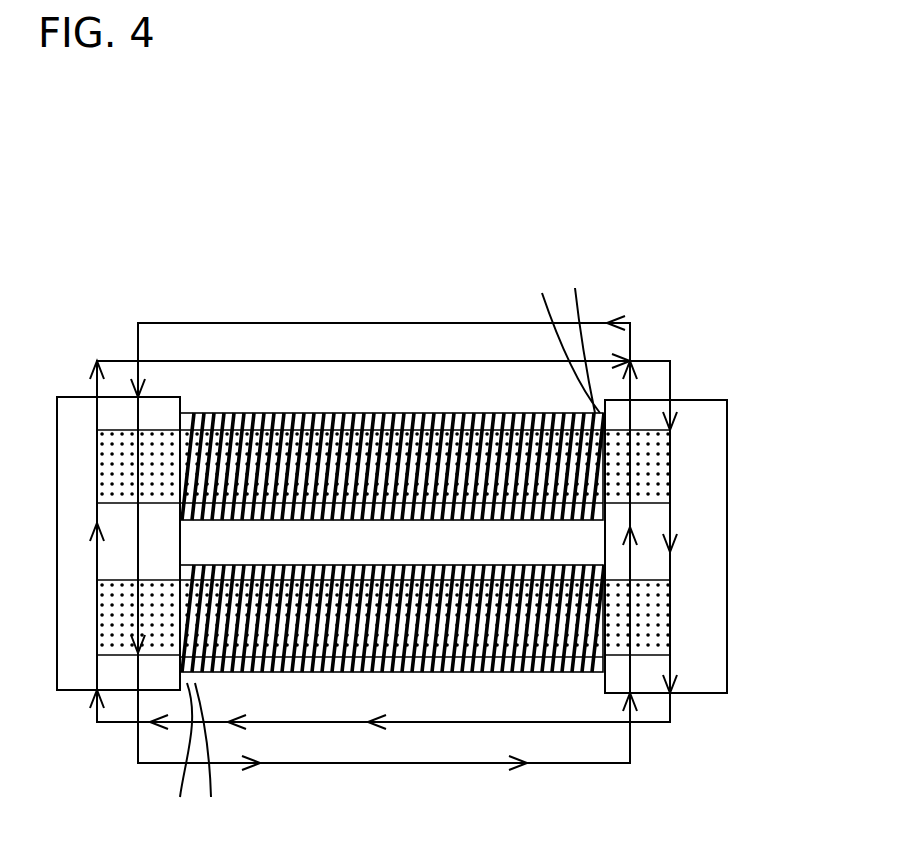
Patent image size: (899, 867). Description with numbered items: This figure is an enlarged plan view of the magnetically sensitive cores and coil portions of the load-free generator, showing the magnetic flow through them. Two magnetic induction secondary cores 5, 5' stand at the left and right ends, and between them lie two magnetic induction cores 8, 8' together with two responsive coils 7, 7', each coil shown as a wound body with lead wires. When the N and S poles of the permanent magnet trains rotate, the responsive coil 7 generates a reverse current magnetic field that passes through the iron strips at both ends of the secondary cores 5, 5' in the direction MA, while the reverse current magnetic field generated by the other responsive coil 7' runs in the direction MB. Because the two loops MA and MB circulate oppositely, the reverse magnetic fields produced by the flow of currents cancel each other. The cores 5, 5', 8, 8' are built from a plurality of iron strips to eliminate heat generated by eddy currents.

The magnetic induction secondary core 5 is at (99, 543).
The magnetic induction secondary core 5' is at (720, 546).
The responsive coil 7 is at (392, 380).
The responsive coil 7' is at (392, 716).
The magnetic induction core 8 is at (697, 466).
The magnetic induction core 8' is at (701, 617).
The direction of reverse current magnetic field MA is at (346, 323).
The direction of reverse current magnetic field MB is at (406, 361).